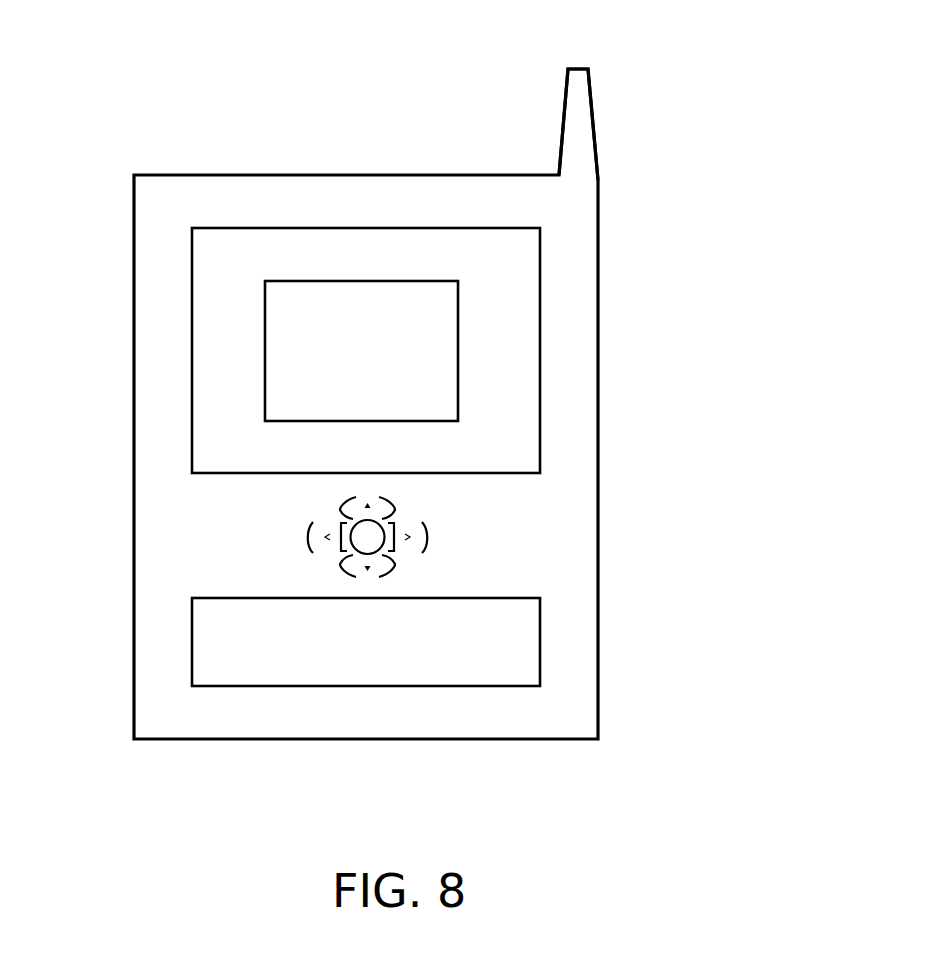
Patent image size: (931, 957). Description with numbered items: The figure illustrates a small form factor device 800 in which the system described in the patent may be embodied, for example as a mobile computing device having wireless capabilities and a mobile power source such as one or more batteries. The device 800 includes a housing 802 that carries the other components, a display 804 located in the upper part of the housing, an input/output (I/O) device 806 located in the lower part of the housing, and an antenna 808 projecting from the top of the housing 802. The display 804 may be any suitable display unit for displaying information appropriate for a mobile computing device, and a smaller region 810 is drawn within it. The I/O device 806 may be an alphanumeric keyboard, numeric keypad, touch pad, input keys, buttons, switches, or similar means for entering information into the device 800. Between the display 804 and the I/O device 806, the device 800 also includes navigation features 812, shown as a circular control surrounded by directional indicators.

The small form factor device 800 is at (152, 86).
The housing 802 is at (598, 458).
The display 804 is at (540, 244).
The input/output (I/O) device 806 is at (540, 633).
The antenna 808 is at (563, 113).
The display window 810 is at (458, 368).
The navigation features 812 is at (440, 528).